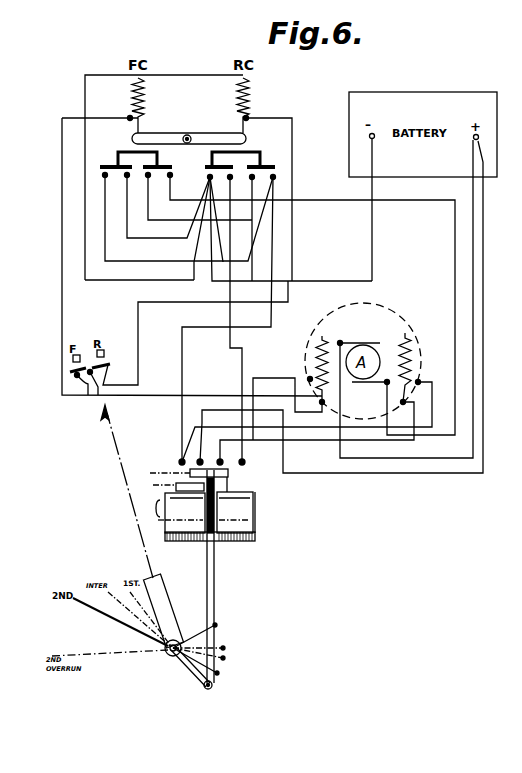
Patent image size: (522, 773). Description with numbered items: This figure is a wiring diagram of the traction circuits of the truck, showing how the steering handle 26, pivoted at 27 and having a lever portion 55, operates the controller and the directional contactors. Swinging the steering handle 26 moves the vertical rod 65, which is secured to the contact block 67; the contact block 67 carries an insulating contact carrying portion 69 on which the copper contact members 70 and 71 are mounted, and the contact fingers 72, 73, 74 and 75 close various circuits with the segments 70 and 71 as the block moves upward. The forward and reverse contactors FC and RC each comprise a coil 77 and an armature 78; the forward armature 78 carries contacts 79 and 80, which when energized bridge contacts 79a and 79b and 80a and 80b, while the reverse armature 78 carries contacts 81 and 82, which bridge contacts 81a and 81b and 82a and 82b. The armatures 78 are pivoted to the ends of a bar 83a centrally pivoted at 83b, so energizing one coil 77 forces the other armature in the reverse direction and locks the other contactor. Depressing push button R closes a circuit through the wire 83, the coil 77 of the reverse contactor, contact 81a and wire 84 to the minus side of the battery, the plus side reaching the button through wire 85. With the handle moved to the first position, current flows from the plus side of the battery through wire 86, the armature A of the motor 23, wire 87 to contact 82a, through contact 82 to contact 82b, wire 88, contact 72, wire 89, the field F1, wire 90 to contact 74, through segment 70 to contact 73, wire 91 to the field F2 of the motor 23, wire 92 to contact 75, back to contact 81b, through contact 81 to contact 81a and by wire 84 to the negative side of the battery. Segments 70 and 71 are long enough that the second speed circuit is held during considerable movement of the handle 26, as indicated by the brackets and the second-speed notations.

The motor 23 is at (387, 306).
The steering handle 26 is at (113, 465).
The pivot 27 is at (167, 657).
The lever portion 55 is at (192, 672).
The vertical rod 65 is at (216, 577).
The contact block 67 is at (258, 538).
The contact carrying portion 69 is at (232, 542).
The contact member 70 is at (242, 507).
The contact member 71 is at (177, 537).
The contact finger 72 is at (180, 458).
The contact finger 73 is at (202, 460).
The contact finger 74 is at (223, 463).
The contact finger 75 is at (244, 461).
The coil 77 is at (132, 86).
The armature 78 is at (129, 118).
The contact 79 is at (112, 166).
The contact 79a is at (106, 178).
The contact 79b is at (130, 182).
The contact 80 is at (118, 152).
The contact 80a is at (160, 170).
The contact 80b is at (168, 167).
The contact 81 is at (212, 152).
The contact 81a is at (216, 200).
The contact 81b is at (231, 180).
The contact 82 is at (262, 156).
The contact 82a is at (256, 177).
The contact 82b is at (276, 170).
The wire 83 is at (140, 302).
The bar 83a is at (204, 133).
The pivot 83b is at (184, 136).
The wire 84 is at (327, 281).
The wire 85 is at (393, 460).
The wire 86 is at (428, 474).
The wire 87 is at (455, 257).
The wire 88 is at (182, 346).
The wire 89 is at (302, 428).
The wire 90 is at (368, 443).
The wire 91 is at (295, 380).
The wire 92 is at (256, 378).
The field F1 is at (405, 337).
The field F2 is at (322, 337).